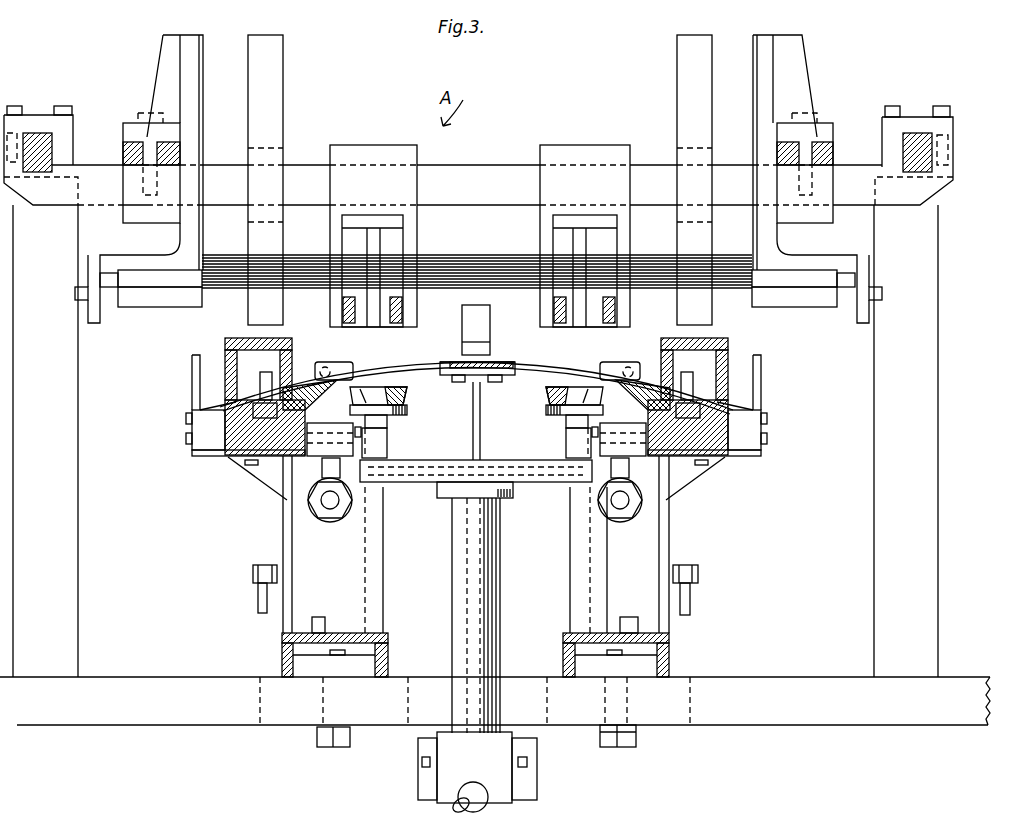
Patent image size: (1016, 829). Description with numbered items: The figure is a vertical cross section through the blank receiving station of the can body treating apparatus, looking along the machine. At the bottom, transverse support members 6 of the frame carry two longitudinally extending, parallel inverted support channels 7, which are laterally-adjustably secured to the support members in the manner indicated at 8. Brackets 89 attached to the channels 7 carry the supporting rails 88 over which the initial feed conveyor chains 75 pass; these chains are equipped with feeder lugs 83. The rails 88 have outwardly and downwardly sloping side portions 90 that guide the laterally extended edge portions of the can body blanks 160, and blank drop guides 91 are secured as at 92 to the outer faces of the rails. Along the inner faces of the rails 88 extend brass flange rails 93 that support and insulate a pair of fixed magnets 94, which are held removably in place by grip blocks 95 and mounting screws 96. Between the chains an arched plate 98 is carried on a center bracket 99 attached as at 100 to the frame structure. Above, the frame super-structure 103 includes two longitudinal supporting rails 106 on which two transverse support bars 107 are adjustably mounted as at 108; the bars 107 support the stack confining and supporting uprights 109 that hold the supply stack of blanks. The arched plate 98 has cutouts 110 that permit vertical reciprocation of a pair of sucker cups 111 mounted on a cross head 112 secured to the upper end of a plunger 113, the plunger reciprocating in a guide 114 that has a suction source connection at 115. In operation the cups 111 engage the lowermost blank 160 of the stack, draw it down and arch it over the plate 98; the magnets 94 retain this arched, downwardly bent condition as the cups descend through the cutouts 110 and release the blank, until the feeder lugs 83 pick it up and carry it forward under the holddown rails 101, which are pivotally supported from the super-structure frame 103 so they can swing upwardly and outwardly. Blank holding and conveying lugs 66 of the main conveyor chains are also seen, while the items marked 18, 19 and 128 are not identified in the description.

The transverse support members 6 is at (103, 680).
The inverted support channels 7 is at (282, 655).
The lateral adjustment securing means 8 is at (325, 703).
The bolt and nut 18 is at (330, 510).
The rod 19 is at (607, 556).
The blank holding and conveying lugs 66 is at (327, 361).
The initial feed conveyor chains 75 is at (186, 420).
The feeder lugs 83 is at (268, 372).
The supporting rails 88 is at (210, 452).
The brackets 89 is at (283, 518).
The outwardly and downwardly sloping side portions 90 is at (192, 410).
The blank drop guides 91 is at (312, 378).
The securing means 92 is at (186, 438).
The brass flange rails 93 is at (268, 478).
The fixed magnets 94 is at (368, 388).
The grip blocks 95 is at (362, 438).
The mounting screws 96 is at (387, 430).
The arched plate 98 is at (508, 362).
The center bracket 99 is at (448, 360).
The bracket attachment 100 is at (480, 400).
The holddown rails 101 is at (225, 342).
The super-structure frame 103 is at (938, 224).
The longitudinal supporting rails 106 is at (55, 135).
The transverse support bars 107 is at (467, 185).
The adjustable mounting 108 is at (44, 114).
The stack confining and supporting uprights 109 is at (198, 134).
The cutouts 110 is at (414, 364).
The sucker cups 111 is at (407, 398).
The cross head 112 is at (432, 485).
The plunger 113 is at (455, 570).
The guide 114 is at (445, 750).
The suction source connection 115 is at (460, 797).
The stop 128 is at (484, 310).
The can body blanks 160 is at (470, 249).